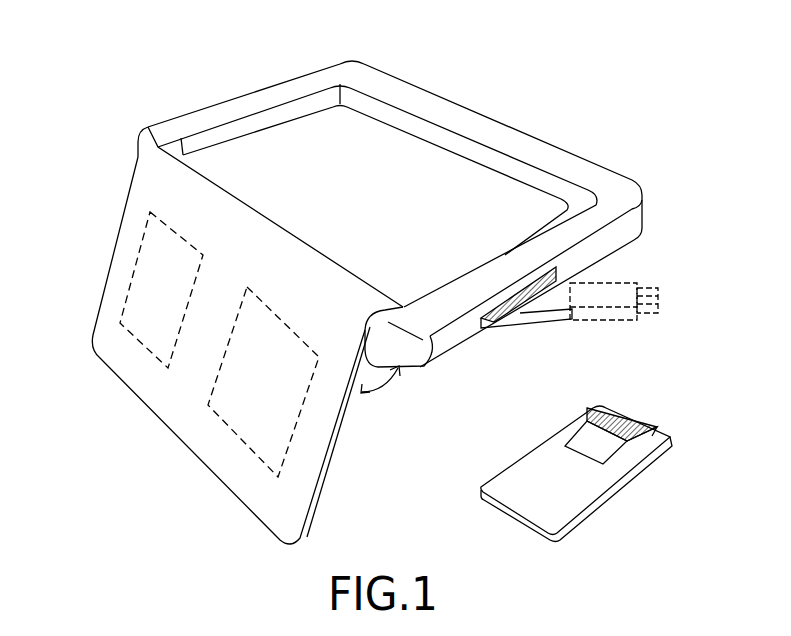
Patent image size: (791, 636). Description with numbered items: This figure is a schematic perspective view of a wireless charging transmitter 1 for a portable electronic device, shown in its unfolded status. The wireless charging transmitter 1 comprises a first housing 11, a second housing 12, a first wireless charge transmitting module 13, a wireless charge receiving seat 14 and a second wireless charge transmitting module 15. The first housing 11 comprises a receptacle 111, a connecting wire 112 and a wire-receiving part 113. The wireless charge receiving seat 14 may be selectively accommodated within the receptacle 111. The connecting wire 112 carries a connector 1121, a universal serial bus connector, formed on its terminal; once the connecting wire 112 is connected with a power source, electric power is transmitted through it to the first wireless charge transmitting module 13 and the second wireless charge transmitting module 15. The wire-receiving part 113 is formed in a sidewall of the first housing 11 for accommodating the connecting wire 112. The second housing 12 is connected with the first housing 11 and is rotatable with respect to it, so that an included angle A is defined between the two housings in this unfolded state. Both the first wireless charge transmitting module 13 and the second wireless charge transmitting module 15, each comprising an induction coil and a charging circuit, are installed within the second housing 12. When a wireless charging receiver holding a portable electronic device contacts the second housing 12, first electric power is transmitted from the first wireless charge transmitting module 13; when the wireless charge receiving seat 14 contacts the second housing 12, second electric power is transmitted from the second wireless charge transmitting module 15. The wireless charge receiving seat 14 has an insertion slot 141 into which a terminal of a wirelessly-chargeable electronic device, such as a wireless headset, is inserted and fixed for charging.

The wireless charging transmitter 1 is at (447, 54).
The first housing 11 is at (220, 98).
The receptacle 111 is at (457, 172).
The connecting wire 112 is at (505, 311).
The wire-receiving part 113 is at (548, 278).
The connector 1121 is at (615, 290).
The second housing 12 is at (136, 212).
The first wireless charge transmitting module 13 is at (293, 414).
The wireless charge receiving seat 14 is at (590, 483).
The insertion slot 141 is at (622, 418).
The second wireless charge transmitting module 15 is at (140, 292).